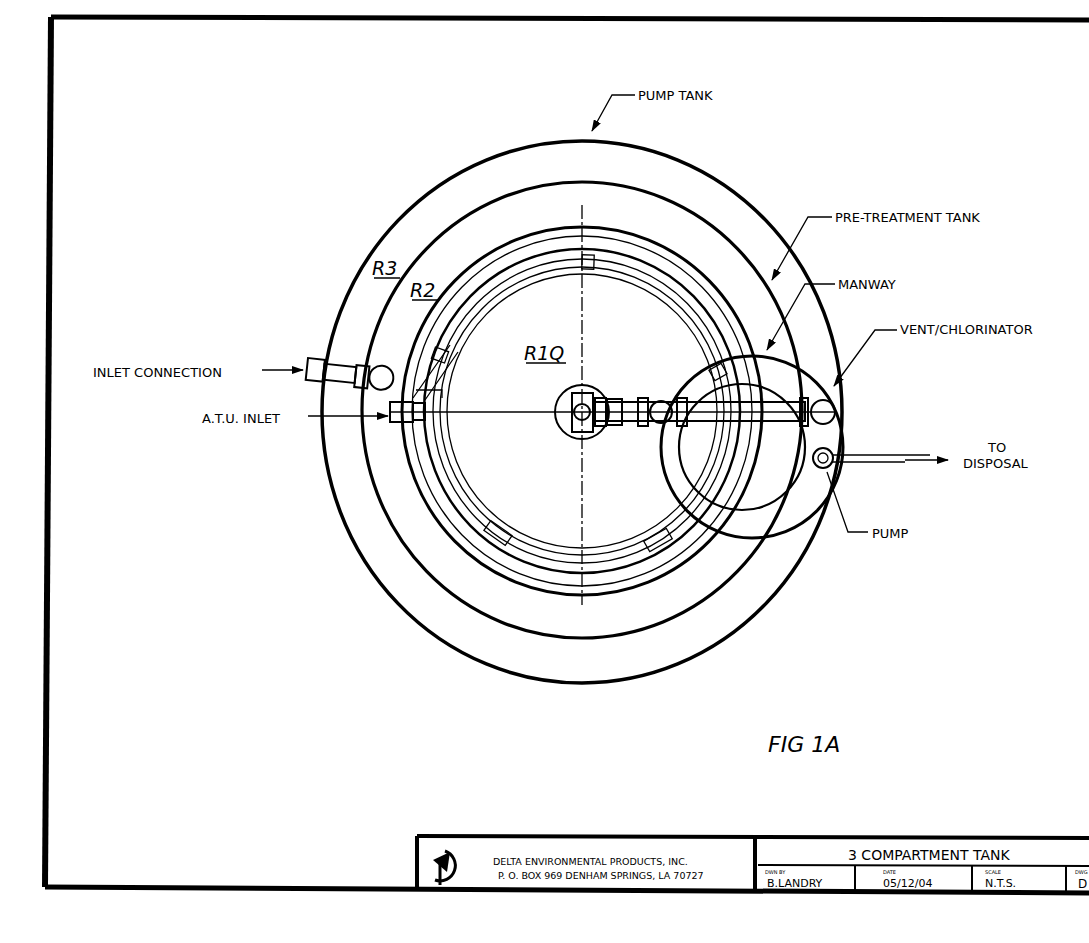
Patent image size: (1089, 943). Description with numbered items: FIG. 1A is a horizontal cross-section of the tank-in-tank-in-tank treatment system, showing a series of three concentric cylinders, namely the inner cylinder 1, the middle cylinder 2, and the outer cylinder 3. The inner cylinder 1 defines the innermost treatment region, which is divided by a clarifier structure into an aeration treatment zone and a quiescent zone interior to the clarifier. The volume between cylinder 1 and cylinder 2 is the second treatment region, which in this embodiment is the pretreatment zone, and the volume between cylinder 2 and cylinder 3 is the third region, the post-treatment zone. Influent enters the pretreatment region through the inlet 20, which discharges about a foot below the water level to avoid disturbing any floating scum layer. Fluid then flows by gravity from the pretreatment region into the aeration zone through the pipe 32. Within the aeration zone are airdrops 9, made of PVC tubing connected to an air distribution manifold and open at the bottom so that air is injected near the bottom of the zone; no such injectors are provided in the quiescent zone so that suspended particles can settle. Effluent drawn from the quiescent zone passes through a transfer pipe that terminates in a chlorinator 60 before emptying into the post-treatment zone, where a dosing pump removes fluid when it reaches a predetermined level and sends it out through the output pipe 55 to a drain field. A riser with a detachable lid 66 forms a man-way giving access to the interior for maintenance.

The inner cylinder 1 is at (548, 227).
The cylinder 2 is at (507, 190).
The cylinder 3 is at (440, 185).
The airdrops 9 is at (657, 542).
The inlet 20 is at (307, 358).
The pipe 32 is at (390, 415).
The output pipe 55 is at (880, 465).
The chlorinator 60 is at (840, 405).
The detachable lid 66 is at (778, 455).